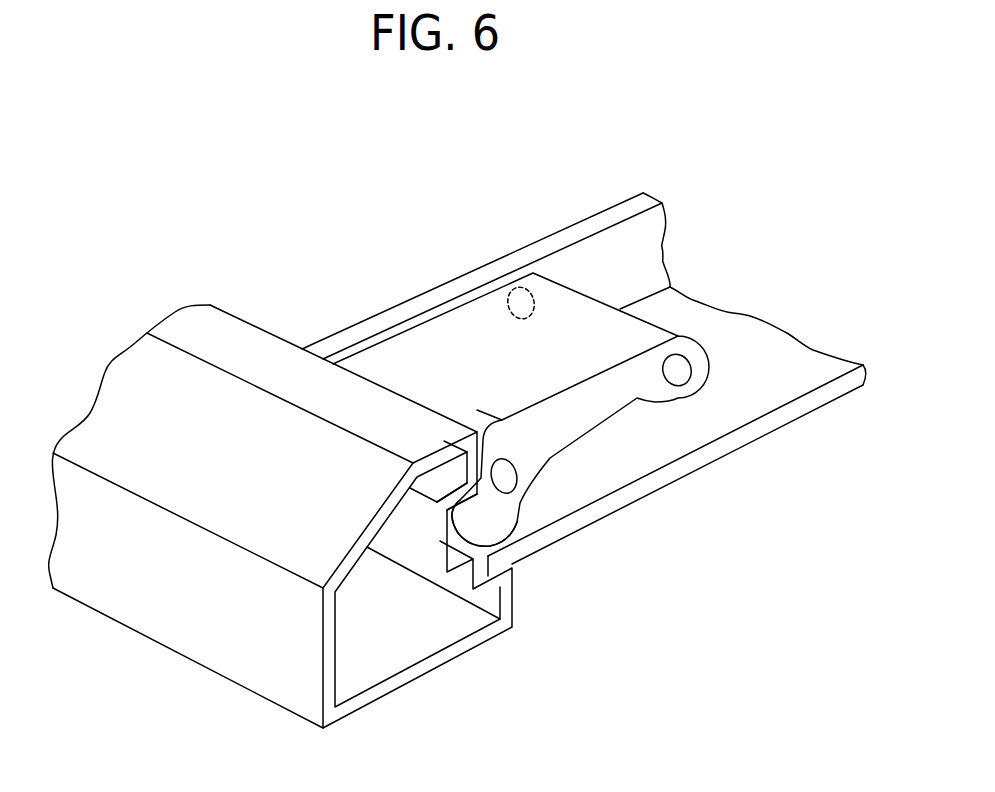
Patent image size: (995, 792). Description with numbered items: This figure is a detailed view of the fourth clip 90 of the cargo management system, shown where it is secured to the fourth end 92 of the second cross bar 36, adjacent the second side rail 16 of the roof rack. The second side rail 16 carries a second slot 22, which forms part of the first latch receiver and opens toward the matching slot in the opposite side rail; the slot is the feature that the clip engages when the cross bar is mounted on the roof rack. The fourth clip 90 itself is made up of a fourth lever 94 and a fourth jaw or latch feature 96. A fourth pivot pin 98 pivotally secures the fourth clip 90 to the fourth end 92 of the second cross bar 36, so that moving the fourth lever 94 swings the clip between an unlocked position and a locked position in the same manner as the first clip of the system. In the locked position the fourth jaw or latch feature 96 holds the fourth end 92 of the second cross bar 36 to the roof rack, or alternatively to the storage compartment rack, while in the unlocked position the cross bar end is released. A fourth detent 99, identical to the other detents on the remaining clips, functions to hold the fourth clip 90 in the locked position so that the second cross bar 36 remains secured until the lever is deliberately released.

The second side rail 16 is at (177, 600).
The second slot 22 is at (468, 497).
The second cross bar 36 is at (800, 337).
The fourth clip 90 is at (509, 227).
The fourth end 92 is at (330, 345).
The fourth lever 94 is at (433, 337).
The fourth jaw or latch feature 96 is at (477, 507).
The fourth pivot pin 98 is at (507, 477).
The fourth detent 99 is at (683, 374).